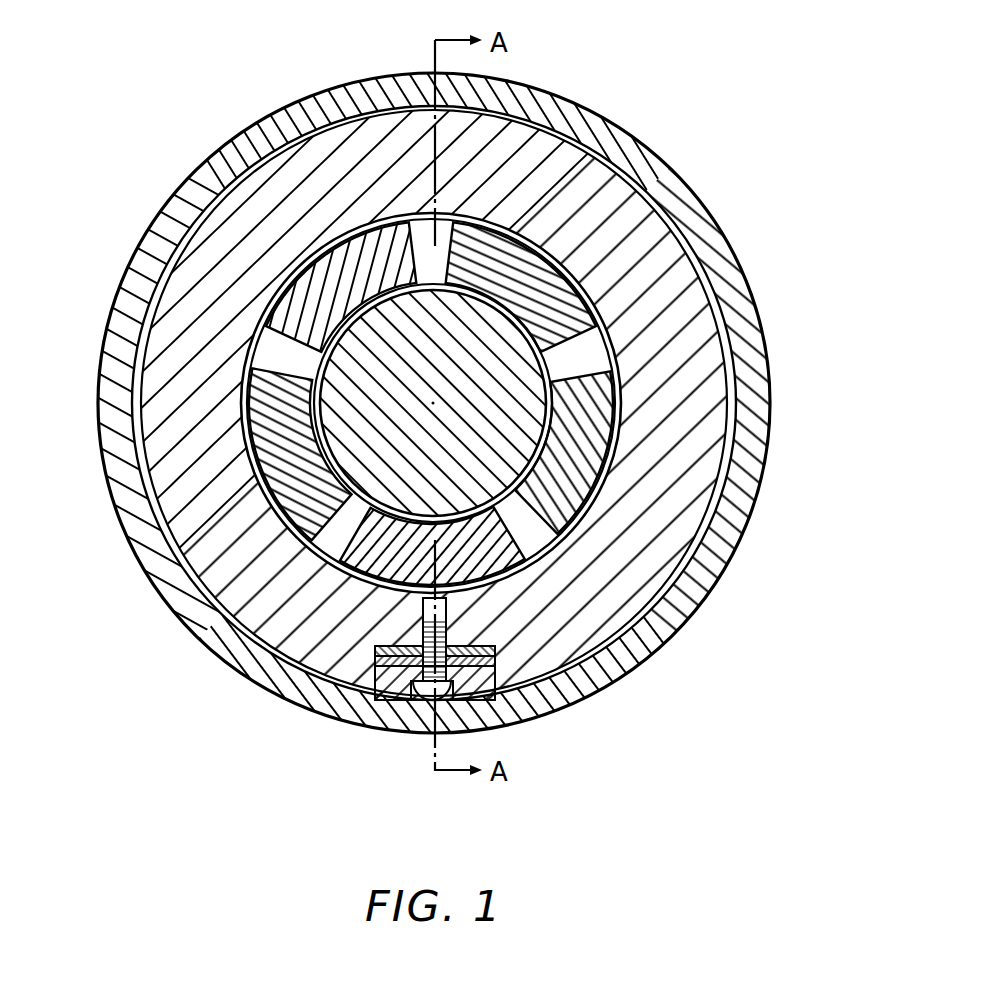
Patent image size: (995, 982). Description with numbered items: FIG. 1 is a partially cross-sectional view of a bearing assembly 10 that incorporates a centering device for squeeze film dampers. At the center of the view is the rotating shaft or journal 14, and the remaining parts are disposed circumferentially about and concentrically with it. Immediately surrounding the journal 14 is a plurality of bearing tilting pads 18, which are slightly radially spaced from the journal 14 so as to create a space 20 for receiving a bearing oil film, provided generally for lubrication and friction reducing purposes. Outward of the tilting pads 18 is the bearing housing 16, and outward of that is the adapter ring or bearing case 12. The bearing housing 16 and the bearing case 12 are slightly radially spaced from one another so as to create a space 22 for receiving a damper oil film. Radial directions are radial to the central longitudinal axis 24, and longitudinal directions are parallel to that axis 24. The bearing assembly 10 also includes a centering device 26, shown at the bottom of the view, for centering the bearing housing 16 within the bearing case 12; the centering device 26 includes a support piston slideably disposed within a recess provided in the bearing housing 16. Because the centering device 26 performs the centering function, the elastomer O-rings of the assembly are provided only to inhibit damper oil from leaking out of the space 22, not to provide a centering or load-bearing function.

The bearing assembly 10 is at (672, 111).
The bearing case 12 is at (196, 194).
The journal 14 is at (488, 372).
The bearing housing 16 is at (653, 557).
The bearing tilting pads 18 is at (580, 473).
The space for bearing oil film 20 is at (565, 406).
The space for damper oil film 22 is at (603, 671).
The central longitudinal axis 24 is at (425, 407).
The centering device 26 is at (372, 672).